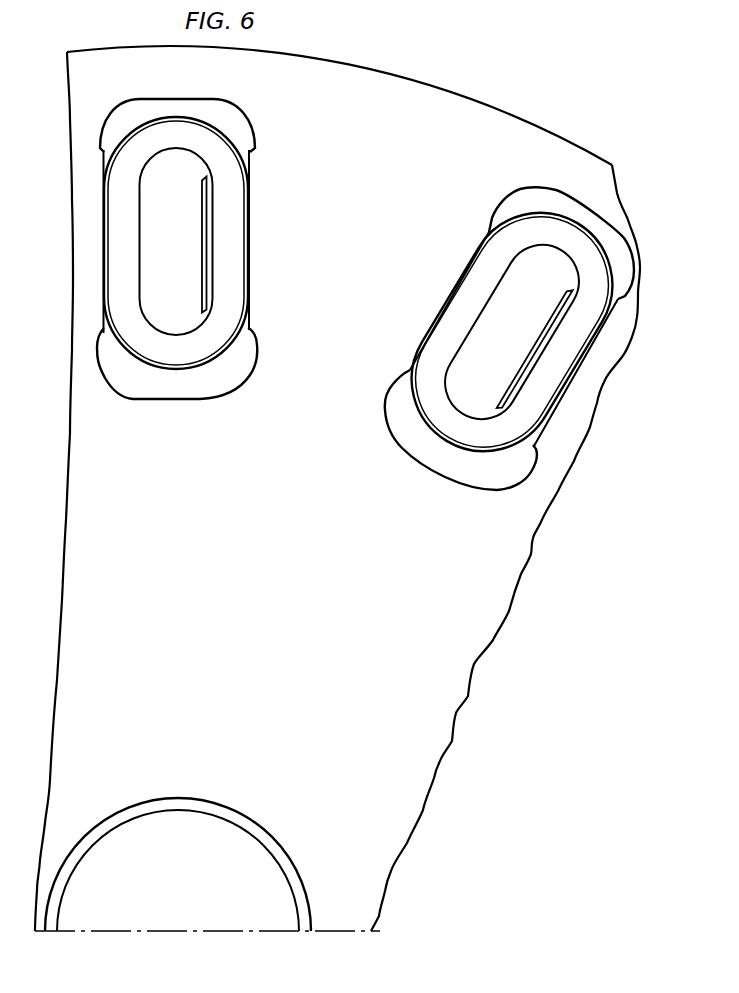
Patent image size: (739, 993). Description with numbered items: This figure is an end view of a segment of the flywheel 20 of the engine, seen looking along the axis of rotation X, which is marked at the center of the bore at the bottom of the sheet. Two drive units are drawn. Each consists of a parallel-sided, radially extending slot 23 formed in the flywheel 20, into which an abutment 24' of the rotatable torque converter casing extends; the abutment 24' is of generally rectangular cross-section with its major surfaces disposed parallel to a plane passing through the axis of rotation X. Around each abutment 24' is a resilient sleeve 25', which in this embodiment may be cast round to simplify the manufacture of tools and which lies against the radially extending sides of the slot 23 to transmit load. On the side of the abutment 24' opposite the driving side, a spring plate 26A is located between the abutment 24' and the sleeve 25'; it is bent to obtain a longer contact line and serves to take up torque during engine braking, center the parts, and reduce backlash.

The flywheel 20 is at (414, 594).
The slot 23 is at (147, 399).
The abutment 24' is at (366, 335).
The resilient sleeve 25' is at (371, 297).
The spring plate 26A is at (214, 215).
The axis of rotation X is at (178, 931).